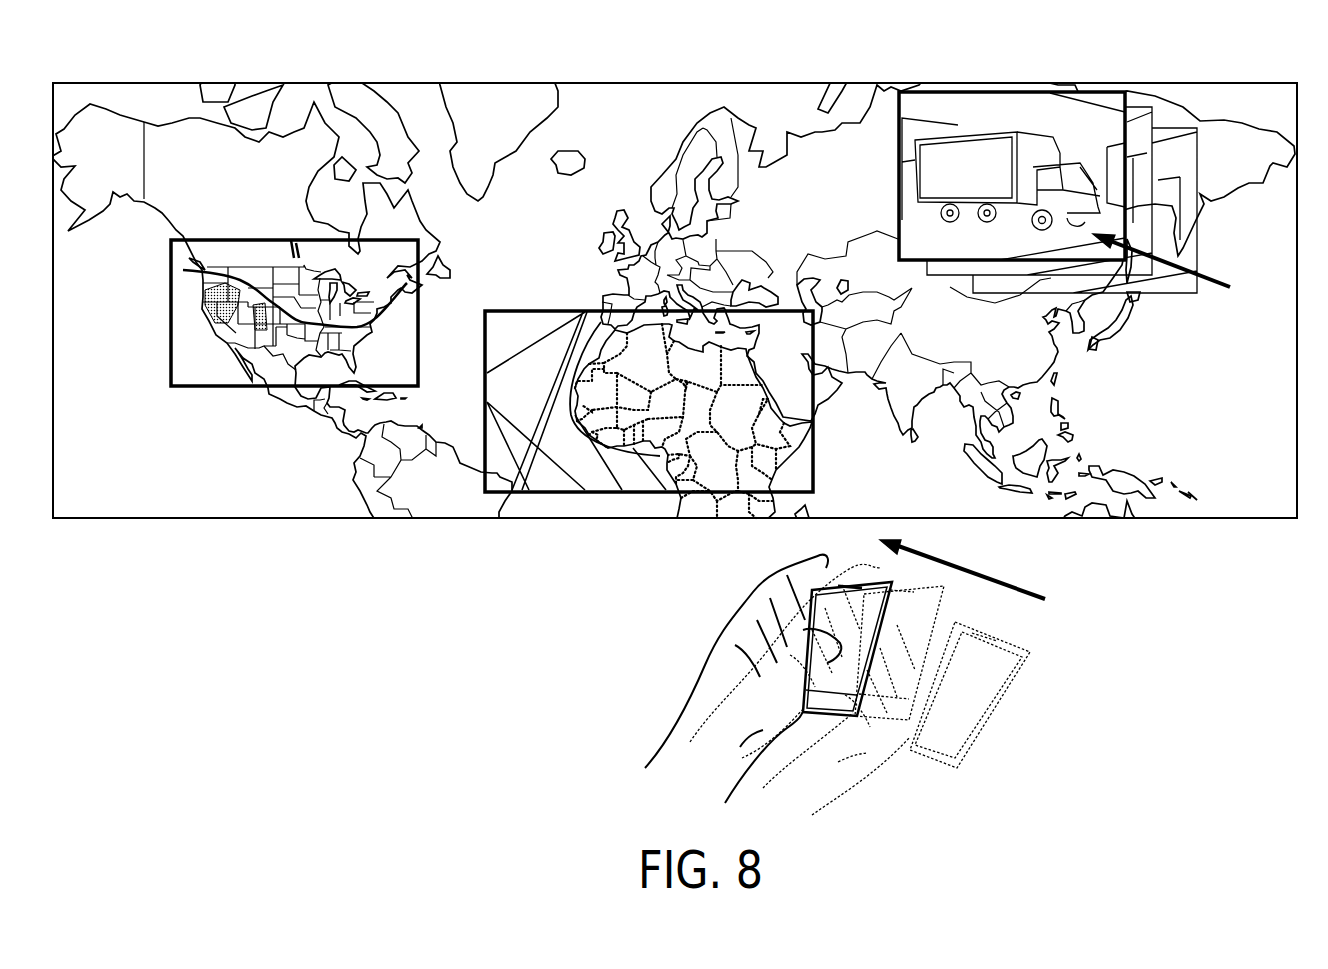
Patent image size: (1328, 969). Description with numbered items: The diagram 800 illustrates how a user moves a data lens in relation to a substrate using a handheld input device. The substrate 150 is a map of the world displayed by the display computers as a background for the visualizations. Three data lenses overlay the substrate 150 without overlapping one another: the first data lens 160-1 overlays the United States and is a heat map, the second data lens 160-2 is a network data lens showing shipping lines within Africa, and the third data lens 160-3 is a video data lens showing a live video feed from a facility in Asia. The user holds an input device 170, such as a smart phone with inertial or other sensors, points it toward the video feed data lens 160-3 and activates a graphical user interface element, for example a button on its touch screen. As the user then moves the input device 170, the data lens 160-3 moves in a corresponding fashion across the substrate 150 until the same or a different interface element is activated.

The substrate 150 is at (655, 83).
The first data lens 160-1 is at (235, 387).
The second data lens 160-2 is at (643, 492).
The third data lens 160-3 is at (1066, 90).
The input device 170 is at (1025, 645).
The diagram 800 is at (357, 741).